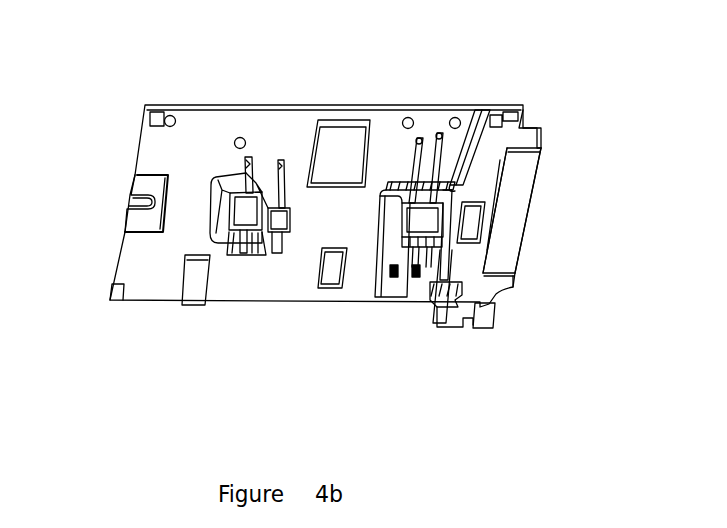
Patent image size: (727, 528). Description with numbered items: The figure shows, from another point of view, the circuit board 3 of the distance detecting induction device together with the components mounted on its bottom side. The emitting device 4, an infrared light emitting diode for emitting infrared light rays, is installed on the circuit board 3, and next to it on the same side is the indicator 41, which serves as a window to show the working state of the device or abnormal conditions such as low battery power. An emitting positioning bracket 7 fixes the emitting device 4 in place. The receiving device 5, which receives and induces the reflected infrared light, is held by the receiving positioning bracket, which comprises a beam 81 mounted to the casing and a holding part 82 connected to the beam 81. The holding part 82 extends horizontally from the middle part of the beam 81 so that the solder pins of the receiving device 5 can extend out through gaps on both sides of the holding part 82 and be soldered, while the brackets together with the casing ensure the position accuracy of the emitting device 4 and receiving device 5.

The circuit board 3 is at (393, 108).
The beam 81 is at (488, 180).
The emitting positioning bracket 7 is at (213, 215).
The emitting device 4 is at (250, 257).
The indicator 41 is at (282, 250).
The holding part 82 is at (377, 300).
The receiving device 5 is at (420, 220).